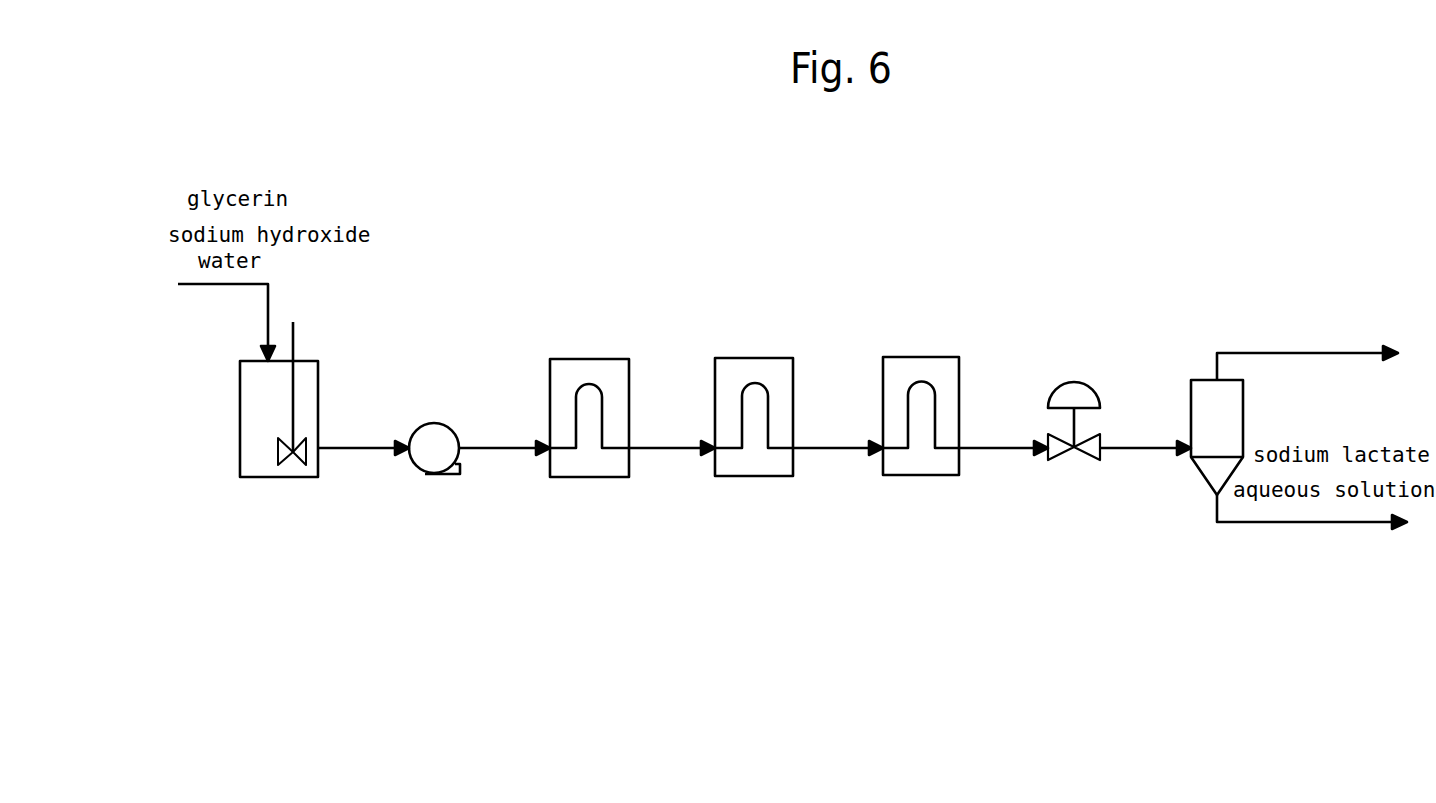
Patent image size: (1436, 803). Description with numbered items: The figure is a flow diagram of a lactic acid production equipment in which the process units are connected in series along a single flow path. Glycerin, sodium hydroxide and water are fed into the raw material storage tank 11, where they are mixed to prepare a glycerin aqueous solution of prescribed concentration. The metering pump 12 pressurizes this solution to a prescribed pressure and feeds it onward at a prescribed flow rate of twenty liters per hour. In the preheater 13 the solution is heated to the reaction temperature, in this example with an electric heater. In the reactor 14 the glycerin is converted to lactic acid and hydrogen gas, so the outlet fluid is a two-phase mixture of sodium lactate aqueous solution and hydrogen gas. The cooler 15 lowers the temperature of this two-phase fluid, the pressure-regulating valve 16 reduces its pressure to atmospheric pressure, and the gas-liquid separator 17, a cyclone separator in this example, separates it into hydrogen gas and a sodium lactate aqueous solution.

The raw material storage tank 11 is at (290, 478).
The metering pump 12 is at (440, 480).
The preheater 13 is at (588, 477).
The reactor 14 is at (755, 477).
The cooler 15 is at (922, 477).
The pressure-regulating valve 16 is at (1090, 460).
The gas-liquid separator 17 is at (1202, 478).